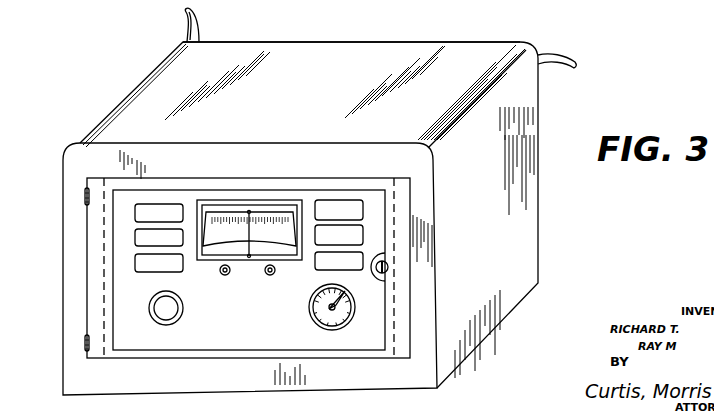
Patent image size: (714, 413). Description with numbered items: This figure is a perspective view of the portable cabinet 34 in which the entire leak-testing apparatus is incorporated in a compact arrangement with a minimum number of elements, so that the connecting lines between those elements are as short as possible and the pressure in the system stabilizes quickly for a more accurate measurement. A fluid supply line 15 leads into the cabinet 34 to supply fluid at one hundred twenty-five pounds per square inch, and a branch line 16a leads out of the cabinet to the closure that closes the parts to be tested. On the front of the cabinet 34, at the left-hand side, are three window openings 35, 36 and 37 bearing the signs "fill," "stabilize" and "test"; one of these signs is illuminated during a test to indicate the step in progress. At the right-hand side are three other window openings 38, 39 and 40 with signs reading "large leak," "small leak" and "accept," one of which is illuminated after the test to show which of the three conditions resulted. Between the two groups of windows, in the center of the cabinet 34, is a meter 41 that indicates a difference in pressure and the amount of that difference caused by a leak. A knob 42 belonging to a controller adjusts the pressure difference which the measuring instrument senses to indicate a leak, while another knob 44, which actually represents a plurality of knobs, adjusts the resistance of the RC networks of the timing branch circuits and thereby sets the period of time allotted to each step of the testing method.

The fluid supply line 15 is at (185, 18).
The cabinet 34 is at (283, 40).
The branch line 16a is at (563, 56).
The window opening 35 is at (135, 212).
The window opening 36 is at (135, 238).
The window opening 37 is at (150, 272).
The window opening 38 is at (363, 200).
The window opening 39 is at (363, 229).
The window opening 40 is at (317, 260).
The meter 41 is at (244, 264).
The knob 42 is at (352, 311).
The knob 44 is at (176, 322).